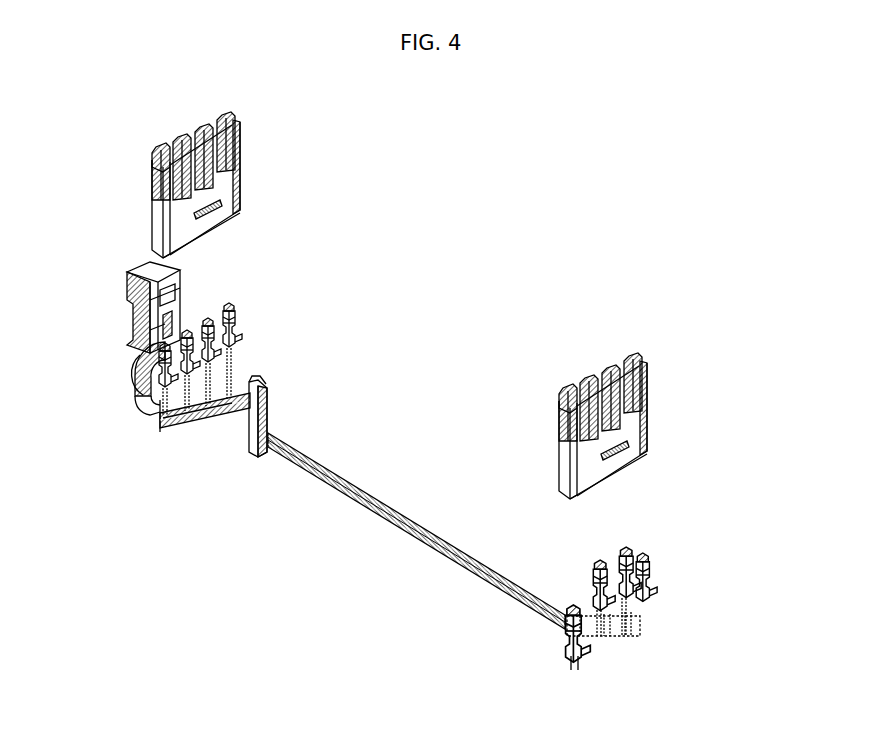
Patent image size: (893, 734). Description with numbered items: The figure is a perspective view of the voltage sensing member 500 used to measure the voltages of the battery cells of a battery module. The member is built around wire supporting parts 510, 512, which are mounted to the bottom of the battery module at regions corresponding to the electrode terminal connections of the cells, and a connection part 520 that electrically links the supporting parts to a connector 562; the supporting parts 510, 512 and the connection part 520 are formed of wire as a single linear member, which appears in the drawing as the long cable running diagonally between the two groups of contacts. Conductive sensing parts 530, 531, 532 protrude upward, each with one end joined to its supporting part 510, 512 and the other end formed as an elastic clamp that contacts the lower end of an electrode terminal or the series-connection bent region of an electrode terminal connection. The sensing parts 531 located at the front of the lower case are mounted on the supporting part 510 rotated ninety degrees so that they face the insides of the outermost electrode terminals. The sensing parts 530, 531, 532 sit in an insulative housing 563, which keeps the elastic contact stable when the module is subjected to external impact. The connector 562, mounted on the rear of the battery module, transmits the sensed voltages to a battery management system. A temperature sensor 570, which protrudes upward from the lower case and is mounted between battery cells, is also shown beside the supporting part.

The voltage sensing member 500 is at (101, 121).
The supporting part 510 is at (640, 621).
The supporting part 512 is at (157, 409).
The connection part 520 is at (387, 496).
The conductive sensing part 530 is at (622, 553).
The conductive sensing part 531 is at (562, 617).
The conductive sensing part 532 is at (232, 316).
The connector 562 is at (120, 318).
The insulative housing 563 is at (636, 353).
The temperature sensor 570 is at (260, 382).